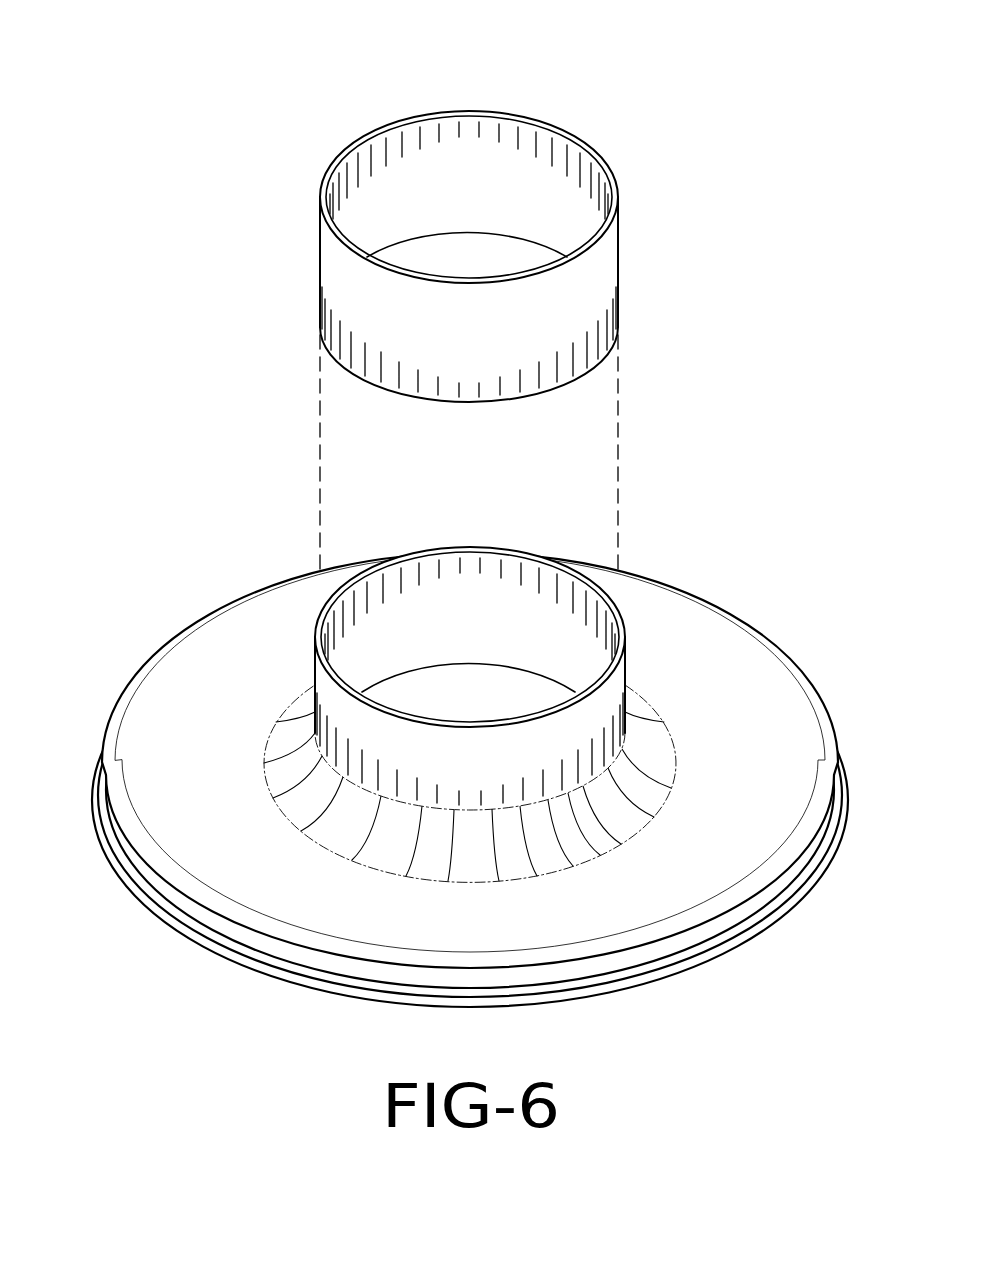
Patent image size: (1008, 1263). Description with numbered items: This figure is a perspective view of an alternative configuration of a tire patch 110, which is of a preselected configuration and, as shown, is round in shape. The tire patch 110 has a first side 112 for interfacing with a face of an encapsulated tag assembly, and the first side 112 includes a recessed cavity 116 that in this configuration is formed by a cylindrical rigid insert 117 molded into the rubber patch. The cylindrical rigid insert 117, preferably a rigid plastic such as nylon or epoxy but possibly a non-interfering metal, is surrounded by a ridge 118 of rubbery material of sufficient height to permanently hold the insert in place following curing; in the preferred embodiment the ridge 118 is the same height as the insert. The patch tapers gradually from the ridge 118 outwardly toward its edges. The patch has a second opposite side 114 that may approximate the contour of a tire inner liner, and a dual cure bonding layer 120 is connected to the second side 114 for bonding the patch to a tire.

The tire patch 110 is at (168, 240).
The first side 112 is at (748, 740).
The second opposite side 114 is at (680, 952).
The recessed cavity 116 is at (450, 690).
The cylindrical rigid insert 117 is at (432, 115).
The ridge 118 is at (415, 768).
The dual cure bonding layer 120 is at (220, 948).